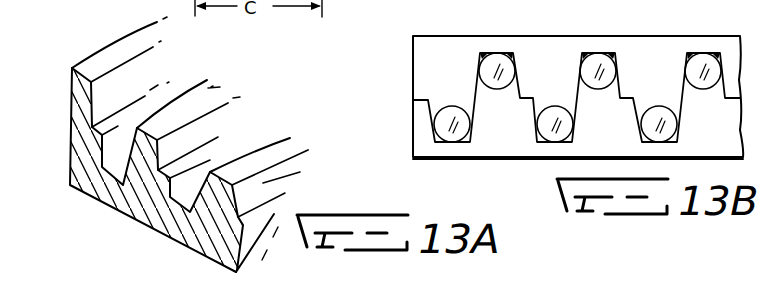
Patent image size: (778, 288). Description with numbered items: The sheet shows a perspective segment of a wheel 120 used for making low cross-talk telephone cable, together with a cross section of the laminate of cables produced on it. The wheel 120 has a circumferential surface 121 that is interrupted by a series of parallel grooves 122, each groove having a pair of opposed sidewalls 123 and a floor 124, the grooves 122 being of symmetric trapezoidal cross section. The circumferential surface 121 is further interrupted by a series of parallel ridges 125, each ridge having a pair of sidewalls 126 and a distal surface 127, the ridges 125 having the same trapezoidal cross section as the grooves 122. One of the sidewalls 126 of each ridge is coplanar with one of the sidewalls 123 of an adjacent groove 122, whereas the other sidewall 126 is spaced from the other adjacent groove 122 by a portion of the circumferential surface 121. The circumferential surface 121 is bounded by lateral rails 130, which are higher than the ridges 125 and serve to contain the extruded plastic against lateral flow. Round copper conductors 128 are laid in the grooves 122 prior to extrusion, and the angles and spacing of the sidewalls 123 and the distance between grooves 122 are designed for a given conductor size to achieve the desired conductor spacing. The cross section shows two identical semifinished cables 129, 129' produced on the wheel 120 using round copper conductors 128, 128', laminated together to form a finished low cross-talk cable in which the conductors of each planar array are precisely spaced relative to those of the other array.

In FIG. 13A, the wheel 120 is at (200, 144).
In FIG. 13A, the circumferential surface 121 is at (125, 112).
In FIG. 13A, the grooves 122 is at (98, 176).
In FIG. 13A, the sidewalls 123 is at (163, 225).
In FIG. 13A, the floor 124 is at (118, 200).
In FIG. 13A, the ridges 125 is at (191, 103).
In FIG. 13A, the sidewalls 126 is at (205, 128).
In FIG. 13A, the distal surface 127 is at (280, 135).
In FIG. 13A, the lateral rails 130 is at (130, 47).
In FIG. 13B, the round copper conductors 128 is at (547, 101).
In FIG. 13B, the round copper conductors 128' is at (600, 71).
In FIG. 13B, the semifinished cable 129 is at (578, 100).
In FIG. 13B, the semifinished cable 129' is at (578, 174).